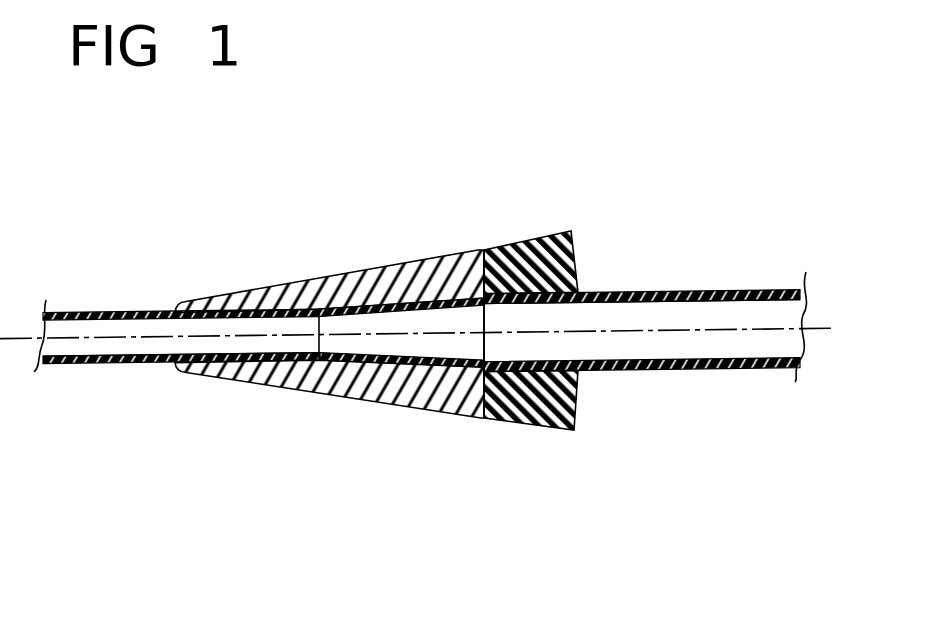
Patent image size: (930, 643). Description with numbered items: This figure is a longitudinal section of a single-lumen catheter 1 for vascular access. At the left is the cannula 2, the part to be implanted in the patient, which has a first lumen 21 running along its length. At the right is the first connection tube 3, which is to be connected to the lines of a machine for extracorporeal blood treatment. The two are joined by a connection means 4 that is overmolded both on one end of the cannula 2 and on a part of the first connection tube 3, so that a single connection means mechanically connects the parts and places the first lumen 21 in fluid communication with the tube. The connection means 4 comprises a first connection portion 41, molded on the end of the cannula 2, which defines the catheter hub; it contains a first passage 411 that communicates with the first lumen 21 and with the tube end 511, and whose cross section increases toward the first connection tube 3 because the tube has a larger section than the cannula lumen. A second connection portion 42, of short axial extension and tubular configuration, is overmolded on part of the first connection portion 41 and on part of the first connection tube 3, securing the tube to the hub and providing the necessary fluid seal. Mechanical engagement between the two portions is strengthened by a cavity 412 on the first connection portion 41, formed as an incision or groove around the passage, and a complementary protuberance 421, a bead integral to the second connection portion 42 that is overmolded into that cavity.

The catheter 1 is at (680, 121).
The cannula 2 is at (181, 314).
The first lumen 21 is at (110, 347).
The first connection tube 3 is at (642, 362).
The connection means 4 is at (376, 323).
The first connection portion 41 is at (329, 326).
The first passage 411 is at (398, 323).
The cavity 412 is at (460, 408).
The protuberance 421 is at (460, 408).
The second connection portion 42 is at (548, 422).
The tube end 511 is at (635, 315).